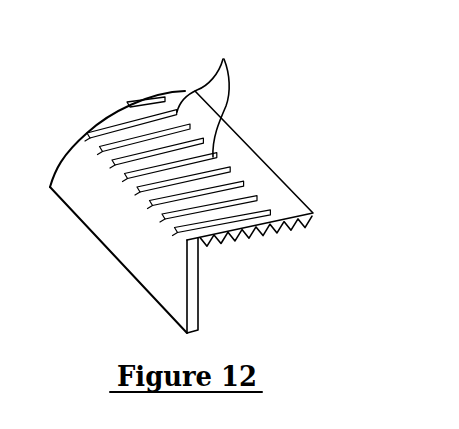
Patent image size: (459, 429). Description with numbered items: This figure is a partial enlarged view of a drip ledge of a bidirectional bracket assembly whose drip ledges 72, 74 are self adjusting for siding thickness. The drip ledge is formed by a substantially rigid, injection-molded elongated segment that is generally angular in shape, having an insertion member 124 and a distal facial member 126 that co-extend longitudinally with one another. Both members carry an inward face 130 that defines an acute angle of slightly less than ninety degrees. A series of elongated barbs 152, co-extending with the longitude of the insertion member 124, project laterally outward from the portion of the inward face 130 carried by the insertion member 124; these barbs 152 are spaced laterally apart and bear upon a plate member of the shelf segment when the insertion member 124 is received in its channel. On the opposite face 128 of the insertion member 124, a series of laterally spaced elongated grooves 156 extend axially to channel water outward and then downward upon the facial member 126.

The elongated grooves 156 is at (207, 94).
The drip ledge 72 is at (258, 120).
The drip ledge 74 is at (258, 120).
The insertion member 124 is at (266, 162).
The facial member 126 is at (133, 277).
The opposite face 128 is at (283, 196).
The inward face 130 is at (198, 297).
The elongated barbs 152 is at (263, 247).